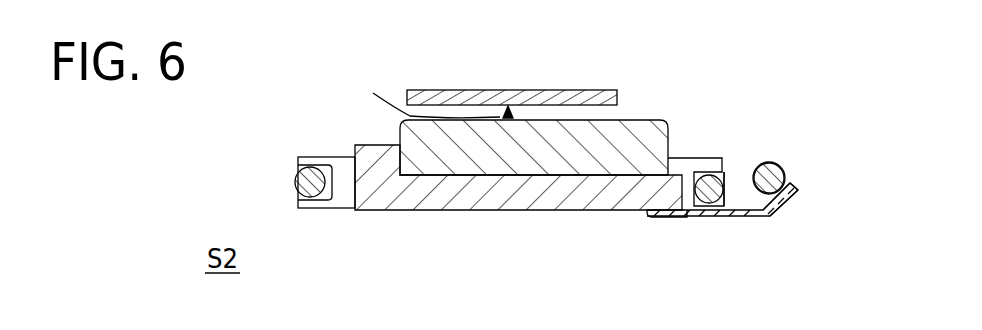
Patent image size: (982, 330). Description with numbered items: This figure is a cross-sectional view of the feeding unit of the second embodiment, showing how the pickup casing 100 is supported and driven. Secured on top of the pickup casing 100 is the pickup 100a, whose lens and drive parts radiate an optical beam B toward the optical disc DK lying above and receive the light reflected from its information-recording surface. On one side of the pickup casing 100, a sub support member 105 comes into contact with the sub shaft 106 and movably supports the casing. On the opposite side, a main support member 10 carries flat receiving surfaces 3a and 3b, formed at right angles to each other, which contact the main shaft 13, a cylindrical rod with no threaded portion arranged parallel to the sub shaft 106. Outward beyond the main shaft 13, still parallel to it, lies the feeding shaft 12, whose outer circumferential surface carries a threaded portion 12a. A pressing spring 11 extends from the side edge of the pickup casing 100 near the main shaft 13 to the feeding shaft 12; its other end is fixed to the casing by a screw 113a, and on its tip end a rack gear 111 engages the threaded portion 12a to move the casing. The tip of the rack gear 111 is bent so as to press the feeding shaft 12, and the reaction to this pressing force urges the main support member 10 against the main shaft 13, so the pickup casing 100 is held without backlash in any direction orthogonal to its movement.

The pickup casing 100 is at (490, 210).
The pickup 100a is at (644, 125).
The optical disc DK is at (430, 90).
The optical beam B is at (430, 93).
The sub support member 105 is at (328, 153).
The sub shaft 106 is at (296, 185).
The main support member 10 is at (696, 158).
The receiving surface 3a is at (725, 172).
The receiving surface 3b is at (695, 213).
The main shaft 13 is at (724, 200).
The screw 113a is at (648, 222).
The pressing spring 11 is at (786, 201).
The rack gear 111 is at (791, 180).
The feeding shaft 12 is at (770, 163).
The threaded portion 12a is at (762, 167).